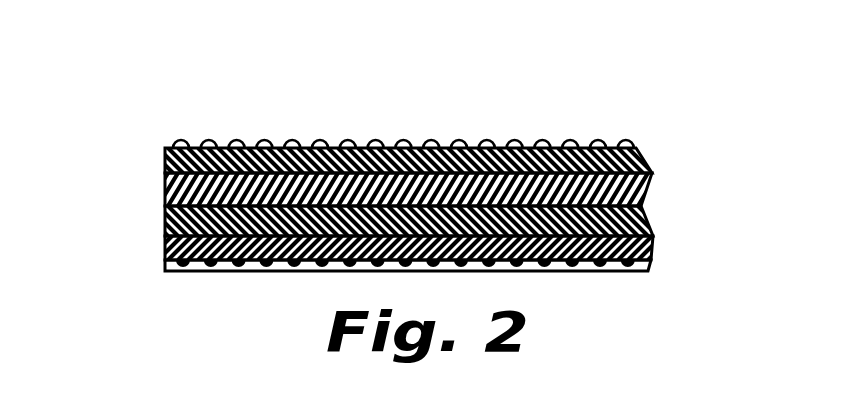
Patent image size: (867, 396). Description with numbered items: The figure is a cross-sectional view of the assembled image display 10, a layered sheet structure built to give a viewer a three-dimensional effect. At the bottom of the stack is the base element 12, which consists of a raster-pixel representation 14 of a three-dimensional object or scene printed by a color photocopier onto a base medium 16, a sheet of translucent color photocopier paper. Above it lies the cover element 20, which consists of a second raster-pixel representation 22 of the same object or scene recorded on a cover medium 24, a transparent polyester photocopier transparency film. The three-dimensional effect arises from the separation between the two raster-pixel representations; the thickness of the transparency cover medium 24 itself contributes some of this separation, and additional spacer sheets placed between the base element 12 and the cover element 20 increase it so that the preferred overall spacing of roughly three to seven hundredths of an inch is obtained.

The image display 10 is at (709, 129).
The base element 12 is at (152, 256).
The raster-pixel representation 14 is at (177, 264).
The base medium 16 is at (245, 259).
The cover element 20 is at (146, 148).
The raster-pixel representation 22 is at (174, 134).
The cover medium 24 is at (248, 139).